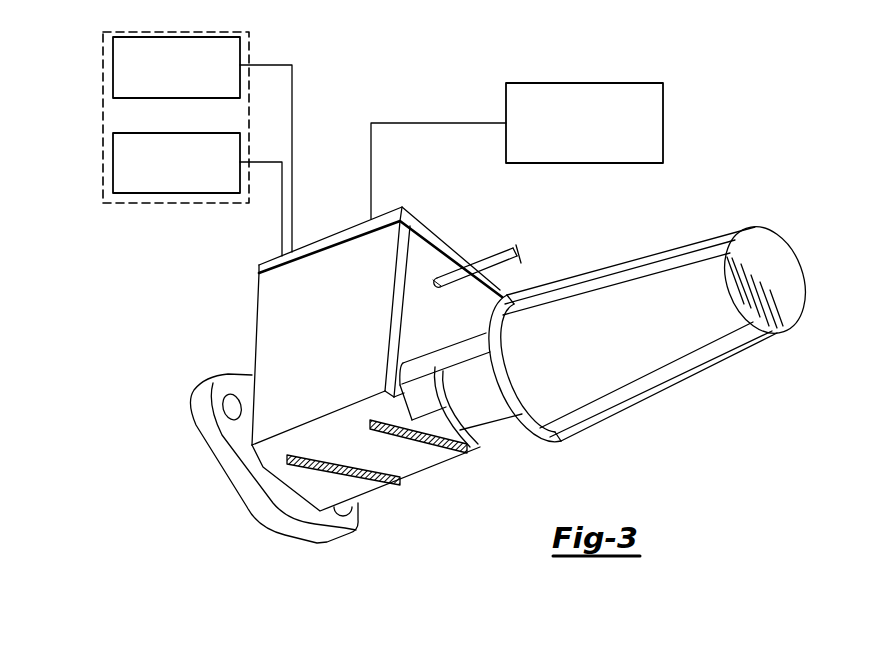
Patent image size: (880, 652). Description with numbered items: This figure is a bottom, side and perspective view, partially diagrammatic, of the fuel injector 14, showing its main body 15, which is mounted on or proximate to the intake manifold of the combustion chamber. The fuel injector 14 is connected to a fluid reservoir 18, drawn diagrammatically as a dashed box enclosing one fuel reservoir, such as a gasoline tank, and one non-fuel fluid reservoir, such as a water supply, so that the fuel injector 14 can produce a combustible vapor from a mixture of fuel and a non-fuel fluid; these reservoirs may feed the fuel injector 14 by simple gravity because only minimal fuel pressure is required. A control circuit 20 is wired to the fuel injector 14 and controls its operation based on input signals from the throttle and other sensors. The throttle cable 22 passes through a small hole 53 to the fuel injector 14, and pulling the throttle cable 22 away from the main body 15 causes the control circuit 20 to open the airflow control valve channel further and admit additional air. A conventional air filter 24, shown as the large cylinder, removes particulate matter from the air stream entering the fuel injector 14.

The fuel injector 14 is at (226, 318).
The main body 15 is at (393, 463).
The fluid reservoir 18 is at (103, 50).
The control circuit 20 is at (553, 83).
The throttle cable 22 is at (490, 252).
The air filter 24 is at (663, 353).
The small hole 53 is at (433, 283).